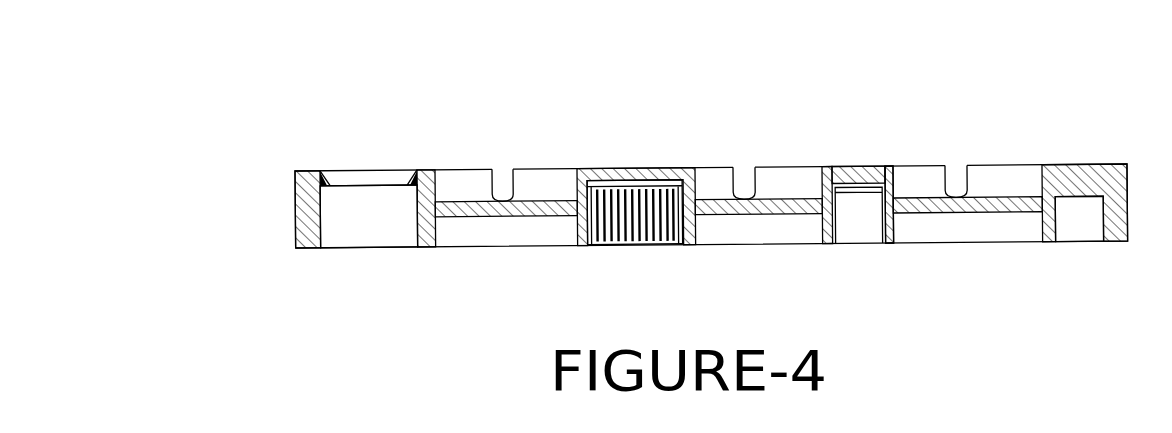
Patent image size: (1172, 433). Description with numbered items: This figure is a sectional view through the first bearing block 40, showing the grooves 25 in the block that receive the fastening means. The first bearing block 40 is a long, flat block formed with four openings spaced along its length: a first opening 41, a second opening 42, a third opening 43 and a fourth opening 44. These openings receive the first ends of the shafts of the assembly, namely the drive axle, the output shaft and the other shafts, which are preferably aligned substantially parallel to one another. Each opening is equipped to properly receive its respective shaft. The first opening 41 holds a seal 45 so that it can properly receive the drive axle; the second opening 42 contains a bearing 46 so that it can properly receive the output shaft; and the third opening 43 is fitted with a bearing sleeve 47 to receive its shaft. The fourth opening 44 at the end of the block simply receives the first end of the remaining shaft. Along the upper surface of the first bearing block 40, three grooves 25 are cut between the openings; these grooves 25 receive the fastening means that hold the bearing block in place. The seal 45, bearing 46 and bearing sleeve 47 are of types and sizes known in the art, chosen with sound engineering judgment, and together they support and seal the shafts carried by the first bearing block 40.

The first bearing block 40 is at (461, 96).
The grooves 25 is at (503, 172).
The first opening 41 is at (368, 235).
The second opening 42 is at (630, 260).
The third opening 43 is at (868, 237).
The fourth opening 44 is at (1078, 241).
The seal 45 is at (387, 172).
The bearing 46 is at (667, 247).
The bearing sleeve 47 is at (835, 228).